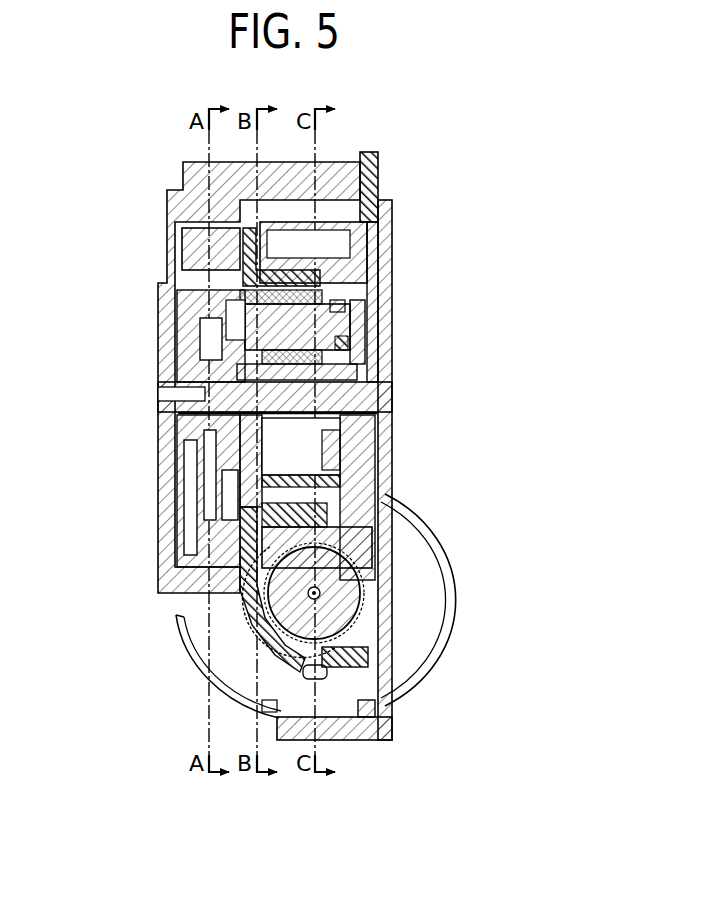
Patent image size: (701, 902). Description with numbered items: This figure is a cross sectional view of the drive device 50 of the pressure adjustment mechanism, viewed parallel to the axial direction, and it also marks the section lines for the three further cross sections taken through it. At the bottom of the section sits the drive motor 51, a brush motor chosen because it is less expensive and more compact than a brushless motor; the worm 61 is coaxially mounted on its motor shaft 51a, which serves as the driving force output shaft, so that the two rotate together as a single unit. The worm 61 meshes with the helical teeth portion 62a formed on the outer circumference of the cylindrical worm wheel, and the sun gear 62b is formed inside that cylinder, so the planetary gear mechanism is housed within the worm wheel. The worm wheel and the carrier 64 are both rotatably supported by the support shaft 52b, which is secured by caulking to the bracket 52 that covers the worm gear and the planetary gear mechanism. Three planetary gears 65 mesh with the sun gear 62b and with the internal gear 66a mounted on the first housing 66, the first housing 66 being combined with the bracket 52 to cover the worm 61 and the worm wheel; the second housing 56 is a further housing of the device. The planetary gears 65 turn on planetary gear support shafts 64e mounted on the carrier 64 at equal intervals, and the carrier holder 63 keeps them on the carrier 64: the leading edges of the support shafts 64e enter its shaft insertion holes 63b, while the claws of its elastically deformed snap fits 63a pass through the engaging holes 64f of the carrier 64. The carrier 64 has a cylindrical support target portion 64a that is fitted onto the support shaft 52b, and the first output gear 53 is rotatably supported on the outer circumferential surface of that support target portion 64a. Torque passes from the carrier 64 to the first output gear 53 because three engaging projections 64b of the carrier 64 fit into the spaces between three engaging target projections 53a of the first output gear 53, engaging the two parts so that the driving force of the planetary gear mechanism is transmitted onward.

The drive device 50 is at (390, 136).
The drive motor 51 is at (410, 687).
The motor shaft 51a is at (318, 596).
The bracket 52 is at (392, 238).
The support shaft 52b is at (356, 397).
The first output gear 53 is at (197, 243).
The engaging target projections 53a is at (213, 502).
The second housing 56 is at (195, 180).
The worm 61 is at (358, 612).
The helical teeth portion 62a is at (356, 576).
The sun gear 62b is at (322, 440).
The carrier holder 63 is at (338, 475).
The snap fits 63a is at (320, 486).
The shaft insertion holes 63b is at (340, 310).
The carrier 64 is at (356, 333).
The support target portion 64a is at (193, 431).
The engaging projections 64b is at (207, 343).
The planetary gear support shafts 64e is at (242, 320).
The engaging holes 64f is at (252, 483).
The planetary gears 65 is at (322, 293).
The first housing 66 is at (276, 656).
The internal gear 66a is at (325, 285).